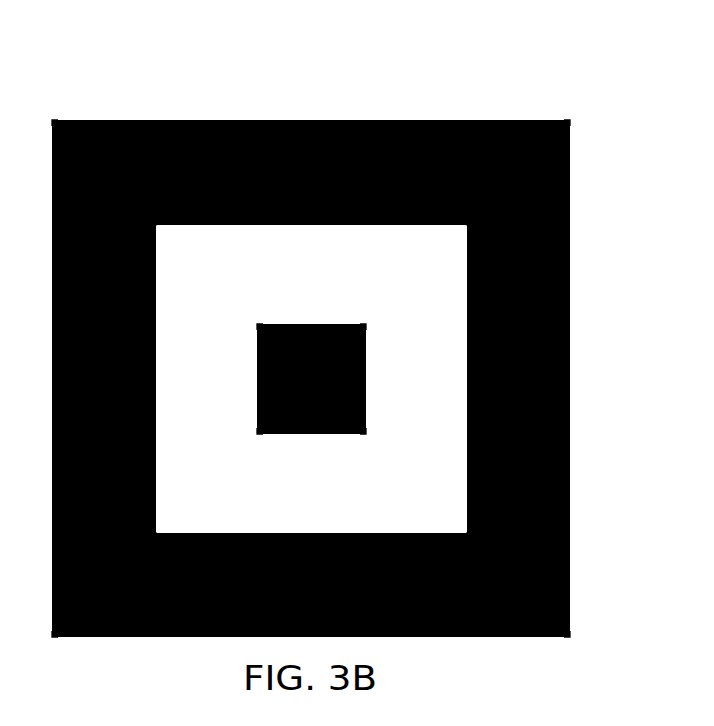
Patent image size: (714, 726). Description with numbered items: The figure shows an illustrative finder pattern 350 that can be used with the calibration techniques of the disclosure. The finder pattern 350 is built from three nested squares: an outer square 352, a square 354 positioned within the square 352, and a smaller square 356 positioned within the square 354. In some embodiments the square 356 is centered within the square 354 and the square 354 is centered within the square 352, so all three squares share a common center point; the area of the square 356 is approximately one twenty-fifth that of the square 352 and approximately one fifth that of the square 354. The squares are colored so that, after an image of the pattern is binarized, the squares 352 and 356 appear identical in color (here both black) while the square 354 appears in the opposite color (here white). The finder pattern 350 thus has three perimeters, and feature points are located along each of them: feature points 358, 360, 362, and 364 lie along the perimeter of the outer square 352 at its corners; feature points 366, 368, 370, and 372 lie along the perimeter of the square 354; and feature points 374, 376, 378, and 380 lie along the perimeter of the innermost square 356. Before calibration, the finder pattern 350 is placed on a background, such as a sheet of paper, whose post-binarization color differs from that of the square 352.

The finder pattern 350 is at (326, 364).
The square 352 is at (560, 375).
The square 354 is at (291, 290).
The square 356 is at (313, 421).
The feature point 358 is at (52, 120).
The feature point 360 is at (570, 120).
The feature point 362 is at (52, 637).
The feature point 364 is at (570, 637).
The feature point 366 is at (160, 227).
The feature point 368 is at (463, 227).
The feature point 370 is at (160, 531).
The feature point 372 is at (465, 532).
The feature point 374 is at (257, 324).
The feature point 376 is at (366, 324).
The feature point 378 is at (257, 434).
The feature point 380 is at (366, 434).